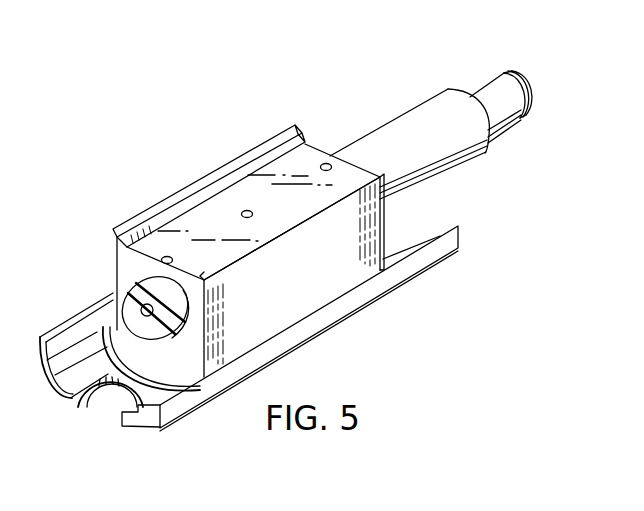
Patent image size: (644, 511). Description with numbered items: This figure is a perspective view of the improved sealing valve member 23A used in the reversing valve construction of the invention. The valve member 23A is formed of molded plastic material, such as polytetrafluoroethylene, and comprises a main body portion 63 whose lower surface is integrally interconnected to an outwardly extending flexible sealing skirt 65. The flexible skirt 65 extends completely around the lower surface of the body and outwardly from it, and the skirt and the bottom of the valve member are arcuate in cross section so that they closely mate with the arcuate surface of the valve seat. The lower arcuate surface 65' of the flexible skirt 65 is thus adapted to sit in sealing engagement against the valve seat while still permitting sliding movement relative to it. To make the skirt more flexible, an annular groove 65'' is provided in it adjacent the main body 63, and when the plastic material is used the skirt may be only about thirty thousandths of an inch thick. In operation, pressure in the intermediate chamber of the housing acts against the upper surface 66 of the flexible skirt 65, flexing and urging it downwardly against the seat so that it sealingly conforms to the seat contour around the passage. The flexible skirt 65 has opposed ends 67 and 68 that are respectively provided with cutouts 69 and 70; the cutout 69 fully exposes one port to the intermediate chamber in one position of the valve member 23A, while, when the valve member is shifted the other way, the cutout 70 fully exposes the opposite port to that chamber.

The valve member 23A is at (168, 194).
The main body portion 63 is at (247, 190).
The flexible sealing skirt 65 is at (75, 320).
The lower arcuate surface 65' is at (154, 449).
The annular groove 65'' is at (123, 298).
The upper surface 66 is at (67, 360).
The end 67 is at (63, 392).
The end 68 is at (432, 240).
The cutout 69 is at (122, 415).
The cutout 70 is at (392, 257).